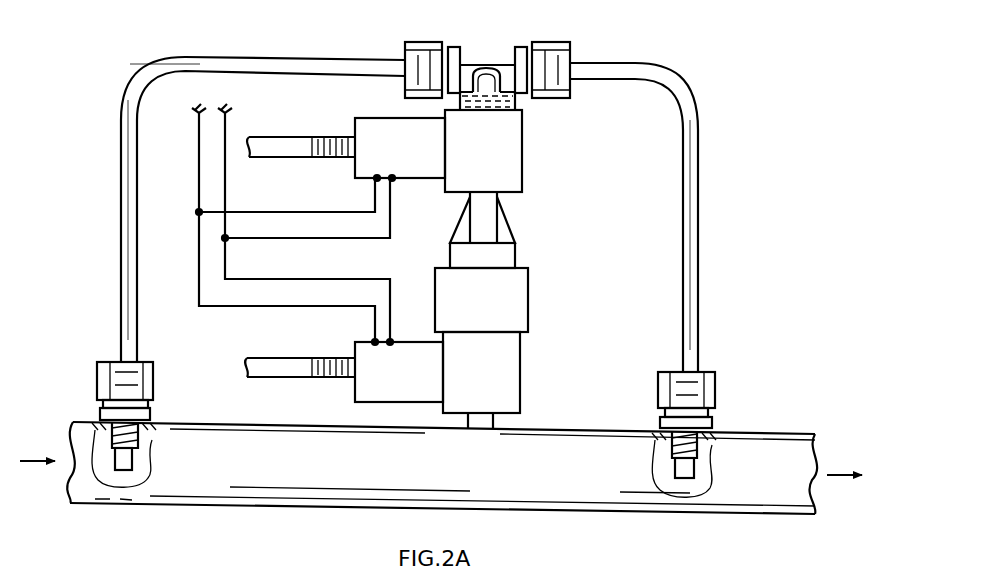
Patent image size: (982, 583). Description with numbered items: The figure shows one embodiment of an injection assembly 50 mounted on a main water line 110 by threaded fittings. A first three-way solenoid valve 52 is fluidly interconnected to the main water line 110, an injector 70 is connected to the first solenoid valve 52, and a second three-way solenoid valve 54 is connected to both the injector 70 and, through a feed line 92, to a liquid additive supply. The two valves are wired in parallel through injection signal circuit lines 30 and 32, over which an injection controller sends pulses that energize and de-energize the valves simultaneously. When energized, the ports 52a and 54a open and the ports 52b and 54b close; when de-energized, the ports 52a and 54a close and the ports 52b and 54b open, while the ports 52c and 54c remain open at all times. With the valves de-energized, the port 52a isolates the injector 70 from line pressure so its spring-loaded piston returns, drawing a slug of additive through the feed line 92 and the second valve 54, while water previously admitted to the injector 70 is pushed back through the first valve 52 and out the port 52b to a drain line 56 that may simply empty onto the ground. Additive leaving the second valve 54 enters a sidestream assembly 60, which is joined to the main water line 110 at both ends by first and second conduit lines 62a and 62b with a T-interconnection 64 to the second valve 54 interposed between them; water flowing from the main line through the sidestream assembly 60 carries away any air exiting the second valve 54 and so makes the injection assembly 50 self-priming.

The injection signal circuit line 30 is at (198, 237).
The injection signal circuit line 32 is at (228, 260).
The injection assembly 50 is at (786, 120).
The first three-way solenoid valve 52 is at (524, 355).
The port of first solenoid valve 52a is at (490, 413).
The port of first solenoid valve 52b is at (333, 386).
The port of first solenoid valve 52c is at (494, 266).
The second three-way solenoid valve 54 is at (524, 140).
The port of second solenoid valve 54a is at (505, 100).
The port of second solenoid valve 54b is at (325, 162).
The port of second solenoid valve 54c is at (485, 197).
The drain line 56 is at (278, 357).
The sidestream assembly 60 is at (478, 41).
The first conduit line 62a is at (156, 70).
The second conduit line 62b is at (690, 97).
The T-interconnection 64 is at (491, 66).
The injector 70 is at (524, 258).
The feed line 92 is at (277, 137).
The main water line 110 is at (95, 422).